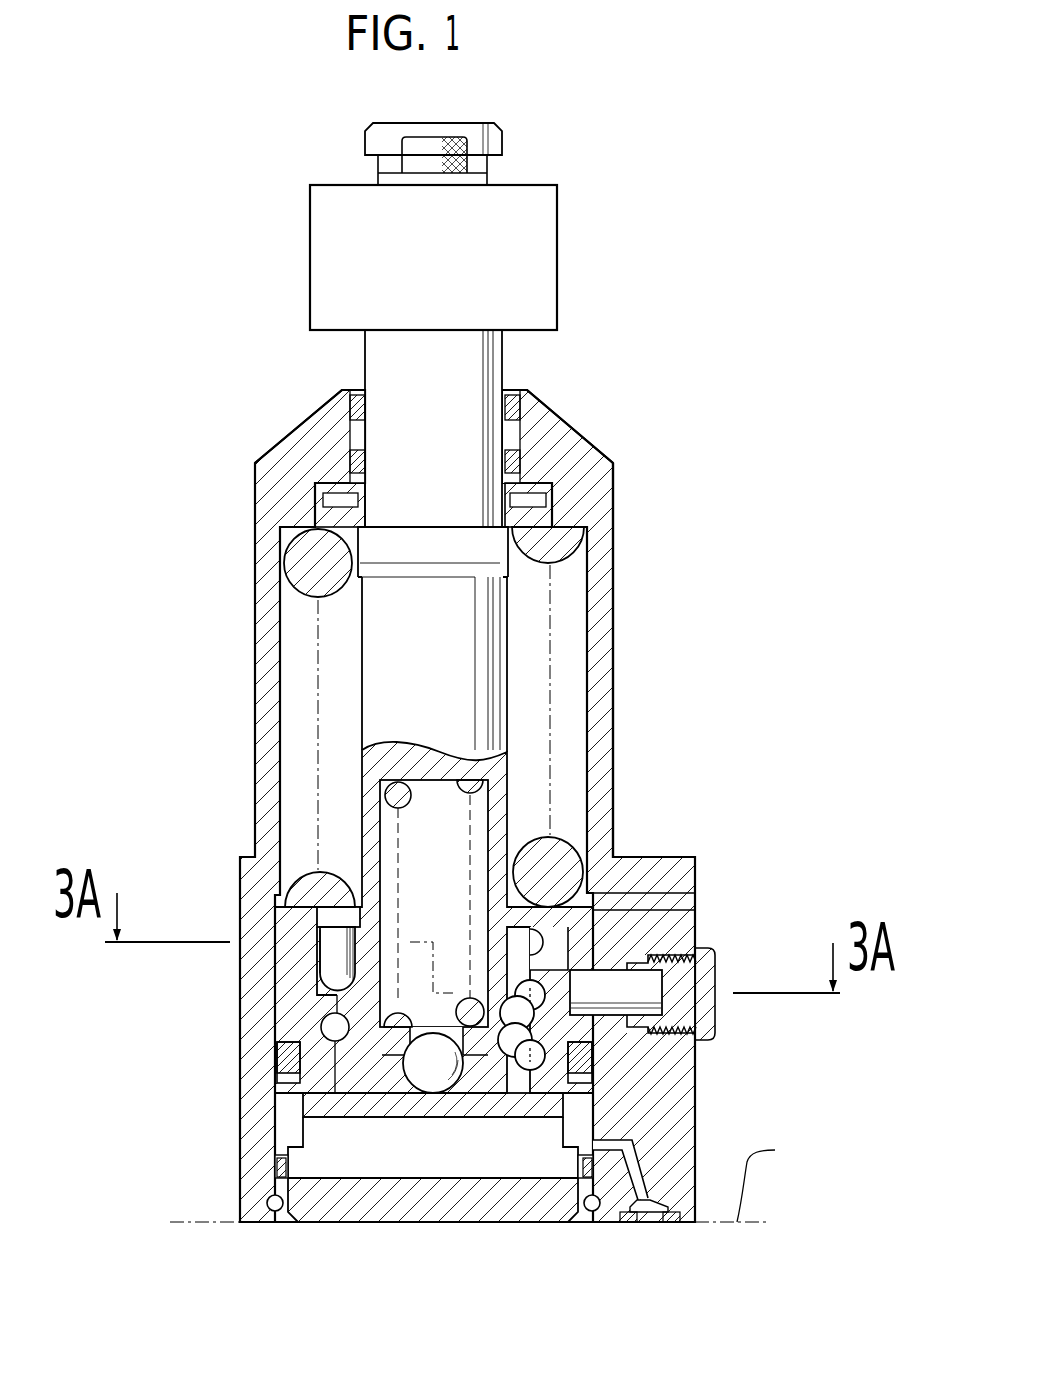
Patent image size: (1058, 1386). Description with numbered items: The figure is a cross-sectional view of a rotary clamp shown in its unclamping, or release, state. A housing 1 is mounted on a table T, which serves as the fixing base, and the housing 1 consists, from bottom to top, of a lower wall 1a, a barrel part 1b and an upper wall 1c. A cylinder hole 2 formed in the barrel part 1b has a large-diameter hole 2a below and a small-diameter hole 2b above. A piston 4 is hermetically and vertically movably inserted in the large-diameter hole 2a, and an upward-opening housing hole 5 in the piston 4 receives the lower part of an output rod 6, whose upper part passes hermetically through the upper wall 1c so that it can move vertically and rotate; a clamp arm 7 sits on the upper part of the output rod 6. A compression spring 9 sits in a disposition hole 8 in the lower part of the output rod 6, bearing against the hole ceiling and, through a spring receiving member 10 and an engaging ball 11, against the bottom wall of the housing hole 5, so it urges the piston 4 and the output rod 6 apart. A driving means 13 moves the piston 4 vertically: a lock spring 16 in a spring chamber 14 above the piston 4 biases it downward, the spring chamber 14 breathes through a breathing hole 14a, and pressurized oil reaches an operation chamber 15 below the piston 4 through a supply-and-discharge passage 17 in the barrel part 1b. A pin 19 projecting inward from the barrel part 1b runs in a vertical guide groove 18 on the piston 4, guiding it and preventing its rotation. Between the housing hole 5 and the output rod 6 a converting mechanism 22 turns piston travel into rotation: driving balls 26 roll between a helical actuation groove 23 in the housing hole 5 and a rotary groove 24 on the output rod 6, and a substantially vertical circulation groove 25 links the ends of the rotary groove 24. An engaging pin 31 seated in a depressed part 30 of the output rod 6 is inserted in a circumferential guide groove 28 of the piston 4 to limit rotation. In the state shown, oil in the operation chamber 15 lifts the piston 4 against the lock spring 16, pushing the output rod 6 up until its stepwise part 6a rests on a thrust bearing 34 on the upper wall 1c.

The housing 1 is at (564, 402).
The lower wall 1a is at (320, 1187).
The barrel part 1b is at (603, 673).
The upper wall 1c is at (578, 447).
The cylinder hole 2 is at (584, 596).
The large-diameter hole 2a is at (580, 1122).
The small-diameter hole 2b is at (584, 634).
The piston 4 is at (323, 1100).
The housing hole 5 is at (600, 905).
The output rod 6 is at (516, 725).
The stepwise part 6a is at (510, 527).
The clamp arm 7 is at (517, 297).
The disposition hole 8 is at (461, 829).
The compression spring 9 is at (485, 788).
The spring receiving member 10 is at (480, 1080).
The engaging ball 11 is at (427, 1095).
The driving means 13 is at (517, 1128).
The spring chamber 14 is at (300, 793).
The breathing hole 14a is at (627, 900).
The operation chamber 15 is at (360, 1163).
The lock spring 16 is at (310, 883).
The supply-and-discharge passage 17 is at (627, 1172).
The guide groove 18 is at (600, 935).
The pin 19 is at (581, 975).
The converting mechanism 22 is at (318, 1047).
The actuation groove 23 is at (277, 1043).
The rotary groove 24 is at (323, 1027).
The circulation groove 25 is at (627, 1033).
The driving balls 26 is at (320, 1036).
The guide groove 28 is at (333, 967).
The depressed part 30 is at (325, 948).
The engaging pin 31 is at (333, 965).
The thrust bearing 34 is at (562, 497).
The table T is at (766, 1170).